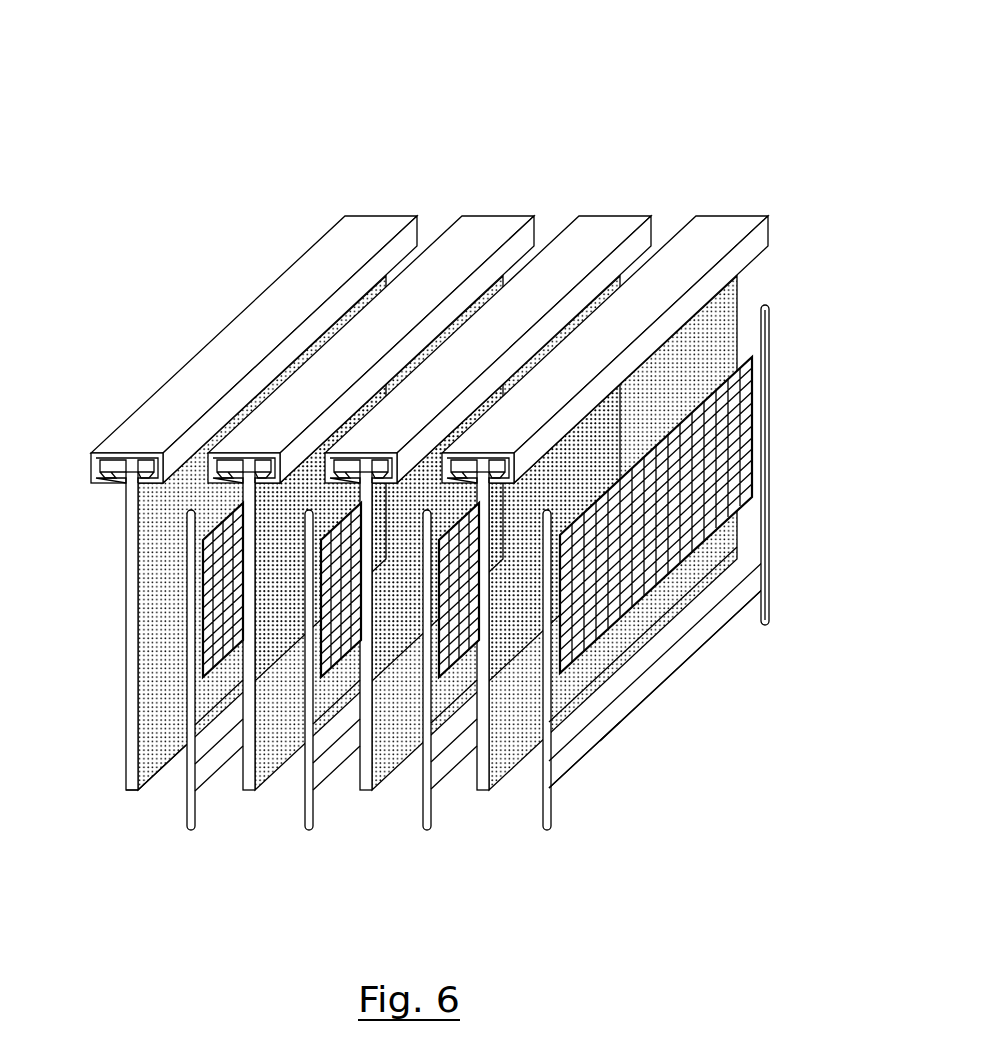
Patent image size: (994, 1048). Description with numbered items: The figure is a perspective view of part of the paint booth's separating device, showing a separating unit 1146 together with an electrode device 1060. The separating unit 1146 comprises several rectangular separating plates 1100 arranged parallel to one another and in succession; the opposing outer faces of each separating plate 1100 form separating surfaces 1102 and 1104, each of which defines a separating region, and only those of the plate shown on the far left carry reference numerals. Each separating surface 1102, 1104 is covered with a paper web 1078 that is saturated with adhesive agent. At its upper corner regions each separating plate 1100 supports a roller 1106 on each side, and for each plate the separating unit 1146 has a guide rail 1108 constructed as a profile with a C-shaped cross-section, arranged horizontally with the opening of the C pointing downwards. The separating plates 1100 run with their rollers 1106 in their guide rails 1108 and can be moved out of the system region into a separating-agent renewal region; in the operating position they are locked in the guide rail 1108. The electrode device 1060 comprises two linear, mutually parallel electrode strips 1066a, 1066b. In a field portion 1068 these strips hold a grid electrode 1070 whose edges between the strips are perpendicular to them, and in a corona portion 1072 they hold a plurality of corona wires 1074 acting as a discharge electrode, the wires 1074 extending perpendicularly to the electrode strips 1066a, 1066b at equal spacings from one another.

The separating unit 1146 is at (150, 128).
The guide rail 1108 is at (353, 240).
The roller 1106 is at (147, 466).
The separating plate 1100 is at (133, 720).
The paper web 1078 is at (716, 315).
The separating surface 1102 is at (125, 770).
The separating surface 1104 is at (152, 750).
The field portion 1068 is at (757, 423).
The grid electrode 1070 is at (750, 364).
The corona wire 1074 is at (743, 527).
The electrode device 1060 is at (713, 660).
The corona portion 1072 is at (600, 752).
The electrode strip 1066a is at (549, 832).
The electrode strip 1066b is at (769, 628).